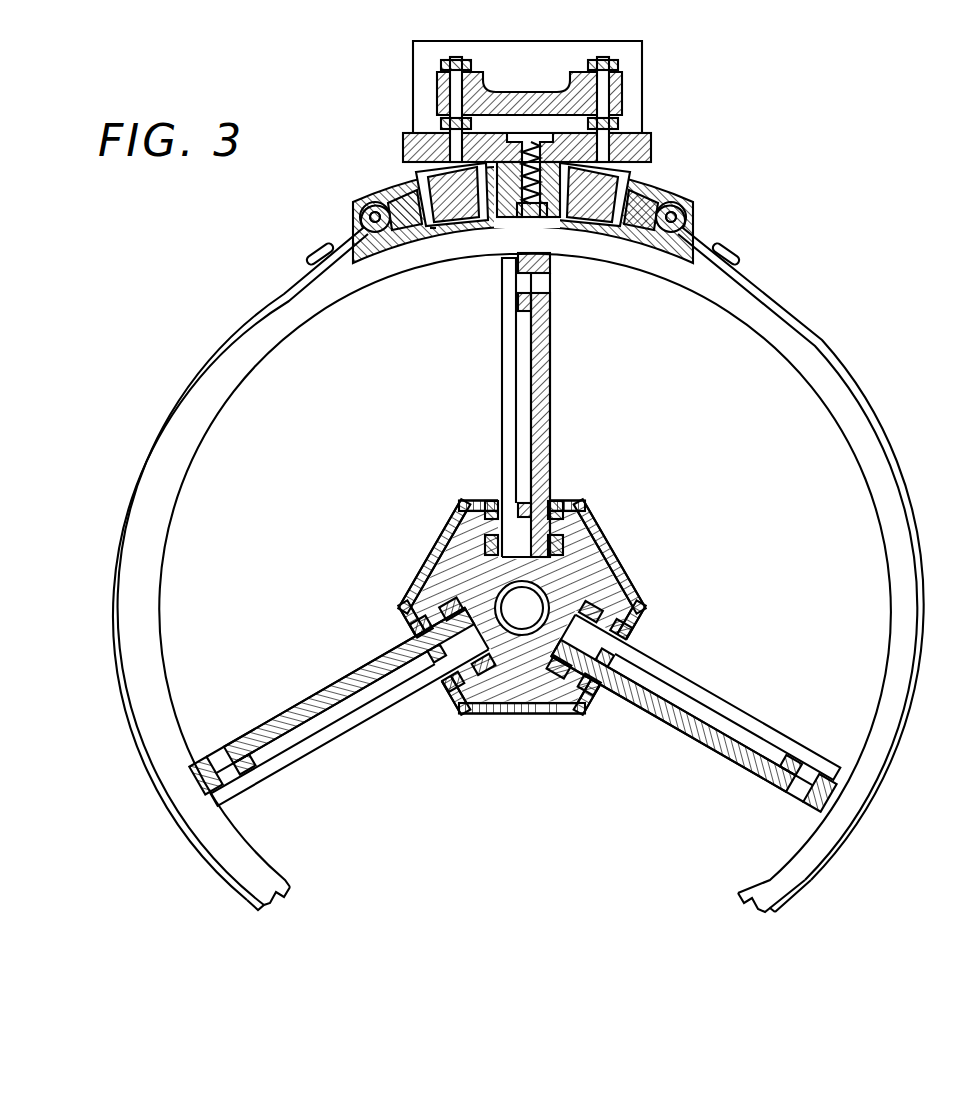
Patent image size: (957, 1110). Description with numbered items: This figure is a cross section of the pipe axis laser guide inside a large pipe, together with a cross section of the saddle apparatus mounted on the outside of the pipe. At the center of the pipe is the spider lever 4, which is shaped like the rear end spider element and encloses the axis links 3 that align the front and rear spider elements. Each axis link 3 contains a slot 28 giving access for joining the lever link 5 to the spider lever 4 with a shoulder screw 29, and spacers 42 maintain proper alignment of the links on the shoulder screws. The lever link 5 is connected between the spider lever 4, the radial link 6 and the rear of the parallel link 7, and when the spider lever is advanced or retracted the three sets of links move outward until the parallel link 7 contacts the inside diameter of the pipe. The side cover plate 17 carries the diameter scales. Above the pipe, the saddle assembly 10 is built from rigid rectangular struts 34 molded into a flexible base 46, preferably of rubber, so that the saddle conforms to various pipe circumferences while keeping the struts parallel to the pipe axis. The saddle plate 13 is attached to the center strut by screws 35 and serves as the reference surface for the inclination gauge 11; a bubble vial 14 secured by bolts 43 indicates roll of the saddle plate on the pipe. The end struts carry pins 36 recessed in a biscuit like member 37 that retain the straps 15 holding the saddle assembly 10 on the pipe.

The axis links 3 is at (490, 503).
The spider lever 4 is at (440, 570).
The lever link 5 is at (545, 330).
The radial link 6 is at (504, 370).
The parallel link 7 is at (518, 297).
The saddle assembly 10 is at (370, 190).
The inclination gauge 11 is at (642, 45).
The saddle plate 13 is at (403, 145).
The bubble vial 14 is at (622, 95).
The straps 15 is at (190, 378).
The side cover plate 17 is at (462, 520).
The slot 28 is at (640, 590).
The shoulder screw 29 is at (588, 508).
The rectangular struts 34 is at (605, 185).
The screws 35 is at (440, 140).
The pins 36 is at (360, 205).
The biscuit like member 37 is at (370, 218).
The spacers 42 is at (540, 470).
The bolts 43 is at (445, 64).
The molded flexible base 46 is at (435, 215).